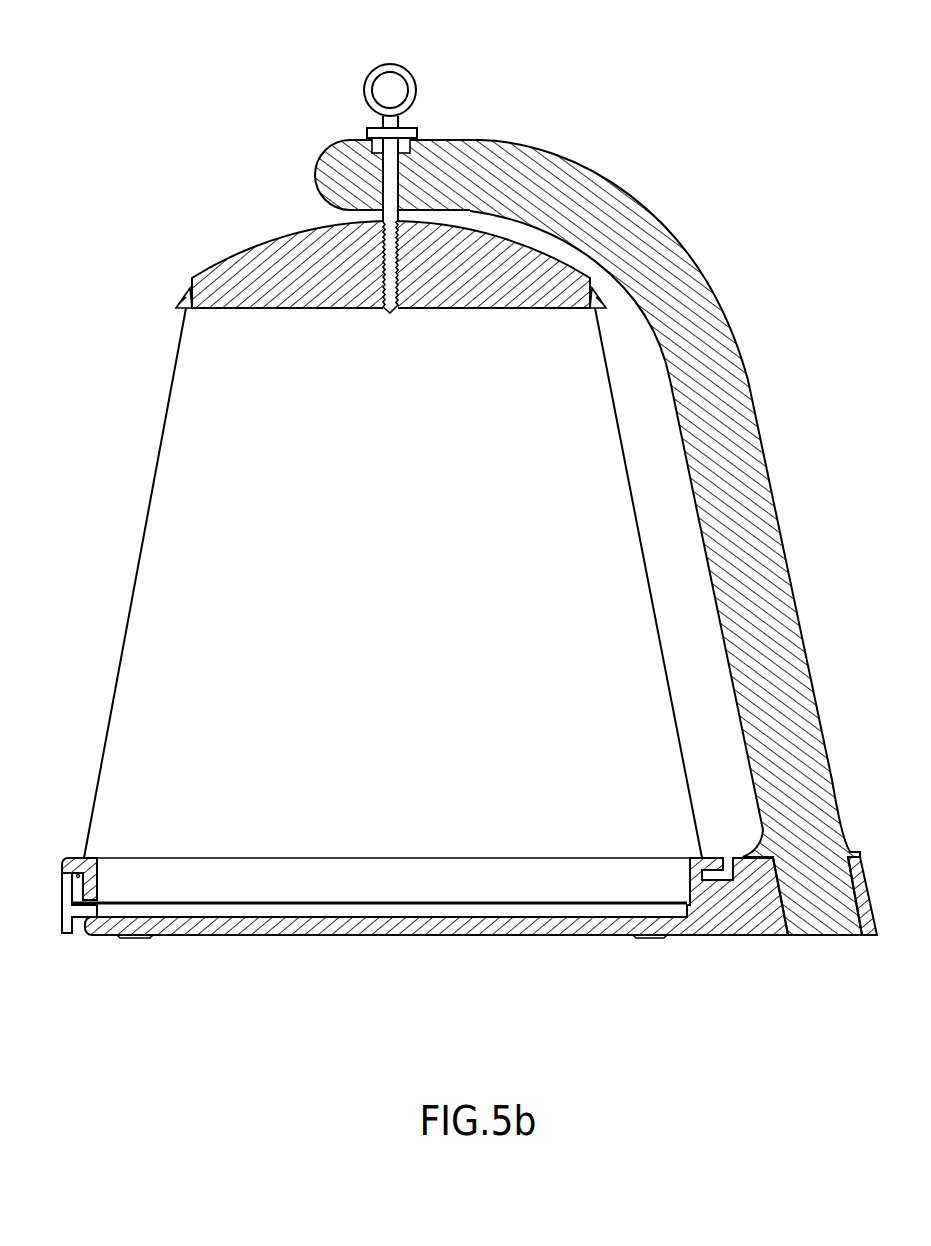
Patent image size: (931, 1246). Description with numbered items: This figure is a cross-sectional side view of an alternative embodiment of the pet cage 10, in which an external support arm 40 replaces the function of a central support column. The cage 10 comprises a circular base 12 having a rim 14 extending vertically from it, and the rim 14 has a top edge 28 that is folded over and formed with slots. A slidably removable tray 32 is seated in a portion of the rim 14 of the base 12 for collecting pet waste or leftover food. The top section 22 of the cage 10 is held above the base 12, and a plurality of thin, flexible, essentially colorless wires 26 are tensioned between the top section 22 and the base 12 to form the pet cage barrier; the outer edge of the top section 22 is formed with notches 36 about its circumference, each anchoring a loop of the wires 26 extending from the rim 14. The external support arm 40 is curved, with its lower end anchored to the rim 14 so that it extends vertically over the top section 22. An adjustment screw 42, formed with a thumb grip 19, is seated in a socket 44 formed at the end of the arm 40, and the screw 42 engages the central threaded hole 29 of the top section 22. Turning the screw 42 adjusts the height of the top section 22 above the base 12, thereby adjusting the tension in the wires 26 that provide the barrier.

The pet cage 10 is at (130, 177).
The circular base 12 is at (215, 936).
The rim 14 is at (100, 886).
The thumb grip 19 is at (398, 65).
The top section 22 is at (465, 309).
The wires 26 is at (128, 612).
The top edge 28 is at (86, 858).
The central threaded hole 29 is at (382, 275).
The slidably removable tray 32 is at (62, 912).
The notches 36 is at (186, 292).
The external support arm 40 is at (786, 520).
The adjustment screw 42 is at (345, 164).
The socket 44 is at (400, 185).